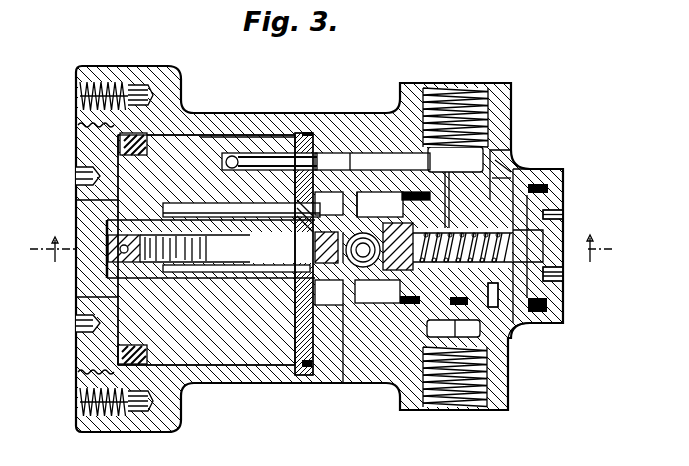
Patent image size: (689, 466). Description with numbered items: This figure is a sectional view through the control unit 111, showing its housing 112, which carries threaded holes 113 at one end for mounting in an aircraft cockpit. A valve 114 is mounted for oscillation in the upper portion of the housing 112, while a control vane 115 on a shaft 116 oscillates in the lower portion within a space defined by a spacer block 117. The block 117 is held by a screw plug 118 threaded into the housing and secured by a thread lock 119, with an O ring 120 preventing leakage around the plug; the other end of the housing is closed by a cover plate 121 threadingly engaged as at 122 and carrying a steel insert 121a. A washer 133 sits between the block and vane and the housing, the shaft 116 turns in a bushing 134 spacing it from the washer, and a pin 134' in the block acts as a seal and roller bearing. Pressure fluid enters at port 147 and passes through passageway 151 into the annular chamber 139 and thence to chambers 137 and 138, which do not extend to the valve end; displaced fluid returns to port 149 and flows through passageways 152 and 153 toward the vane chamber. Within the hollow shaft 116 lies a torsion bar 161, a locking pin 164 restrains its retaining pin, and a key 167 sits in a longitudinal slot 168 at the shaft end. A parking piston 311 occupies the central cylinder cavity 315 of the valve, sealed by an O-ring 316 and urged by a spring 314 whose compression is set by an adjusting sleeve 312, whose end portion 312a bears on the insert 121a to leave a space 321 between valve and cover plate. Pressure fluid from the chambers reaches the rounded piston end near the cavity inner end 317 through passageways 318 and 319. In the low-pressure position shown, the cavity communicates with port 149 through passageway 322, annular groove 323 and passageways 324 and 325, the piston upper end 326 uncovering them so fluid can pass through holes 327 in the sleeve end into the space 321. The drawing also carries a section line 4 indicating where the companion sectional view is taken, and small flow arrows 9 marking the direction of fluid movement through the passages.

The control unit 111 is at (566, 172).
The housing 112 is at (345, 374).
The threaded holes 113 is at (78, 96).
The valve 114 is at (529, 374).
The control vane 115 is at (218, 350).
The shaft 116 is at (165, 210).
The block 117 is at (133, 173).
The screw plug 118 is at (78, 137).
The thread lock 119 is at (118, 129).
The O ring 120 is at (133, 136).
The cover plate 121 is at (548, 170).
The insert 121a is at (560, 213).
The threaded engagement 122 is at (548, 306).
The washer 133 is at (303, 352).
The bushing 134 is at (293, 292).
The pin 134' is at (195, 248).
The fluid chamber 137 is at (380, 215).
The fluid chamber 138 is at (330, 344).
The fluid chamber 139 is at (411, 176).
The fluid port 147 is at (457, 398).
The fluid port 149 is at (450, 108).
The passageway 151 is at (453, 328).
The passageway 152 is at (252, 163).
The passageway 153 is at (230, 157).
The torsion bar 161 is at (108, 262).
The locking pin 164 is at (108, 248).
The key 167 is at (340, 246).
The longitudinal slot 168 is at (300, 204).
The parking piston 311 is at (379, 246).
The adjusting sleeve 312 is at (517, 328).
The end portion 312a is at (562, 234).
The spring 314 is at (462, 208).
The cylinder cavity 315 is at (467, 328).
The O-ring 316 is at (380, 204).
The inner end 317 is at (372, 161).
The fluid passageway 318 is at (364, 161).
The fluid passageway 319 is at (382, 319).
The space 321 is at (496, 190).
The passageway 322 is at (504, 170).
The annular groove 323 is at (457, 159).
The passageway 324 is at (500, 181).
The passageway 325 is at (435, 309).
The upper end 326 is at (380, 292).
The holes 327 is at (564, 197).
The section line 4- 4 is at (320, 248).
The flow arrow 9 is at (338, 204).